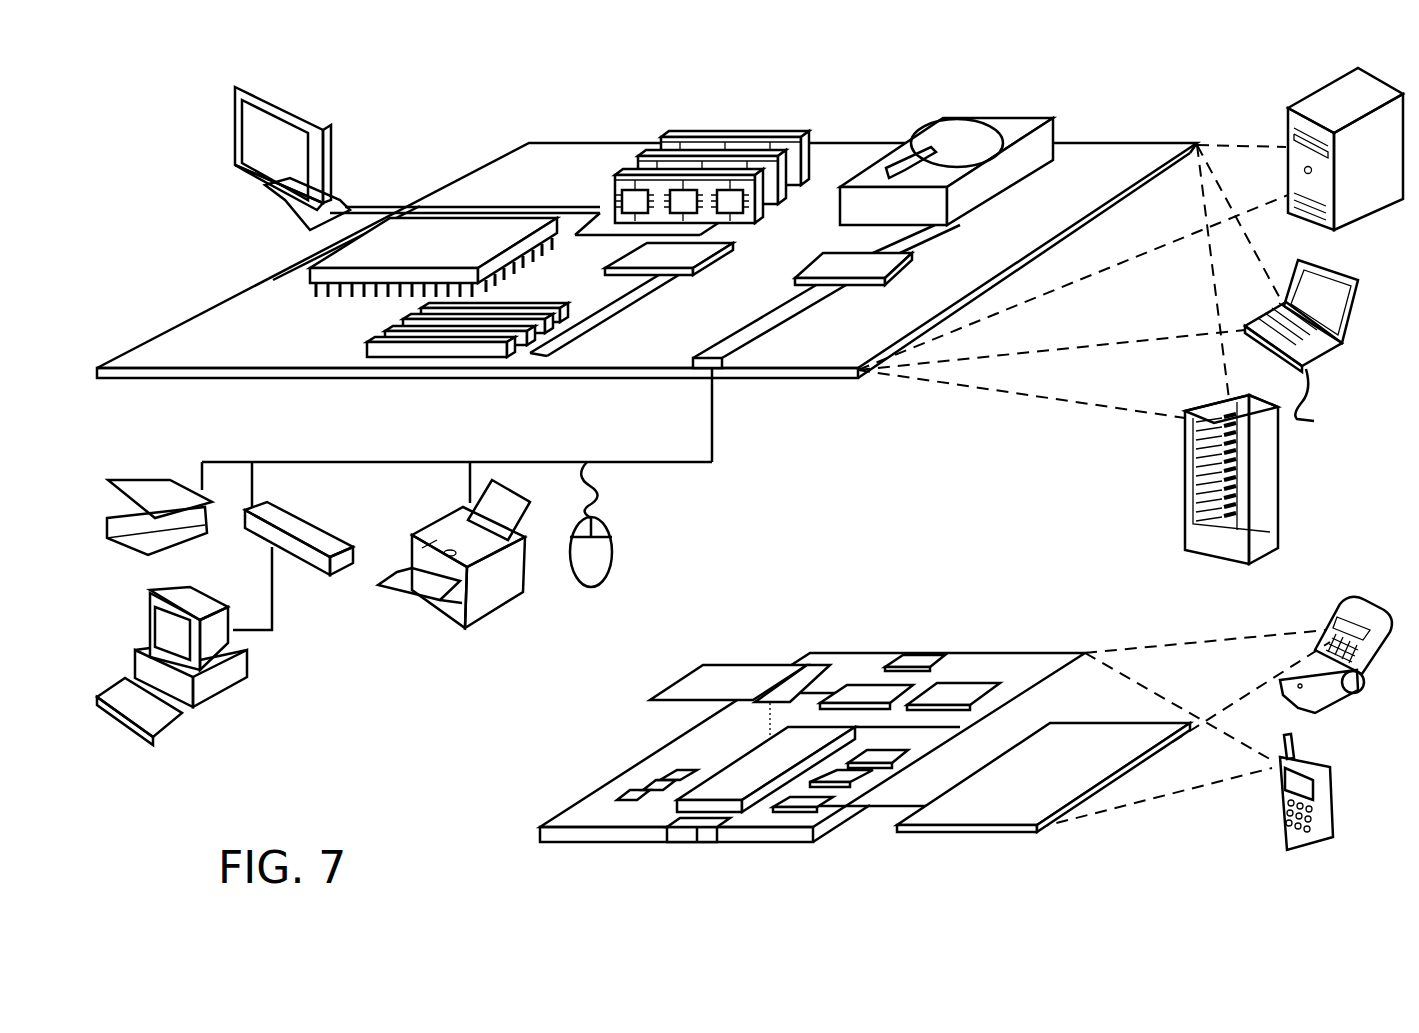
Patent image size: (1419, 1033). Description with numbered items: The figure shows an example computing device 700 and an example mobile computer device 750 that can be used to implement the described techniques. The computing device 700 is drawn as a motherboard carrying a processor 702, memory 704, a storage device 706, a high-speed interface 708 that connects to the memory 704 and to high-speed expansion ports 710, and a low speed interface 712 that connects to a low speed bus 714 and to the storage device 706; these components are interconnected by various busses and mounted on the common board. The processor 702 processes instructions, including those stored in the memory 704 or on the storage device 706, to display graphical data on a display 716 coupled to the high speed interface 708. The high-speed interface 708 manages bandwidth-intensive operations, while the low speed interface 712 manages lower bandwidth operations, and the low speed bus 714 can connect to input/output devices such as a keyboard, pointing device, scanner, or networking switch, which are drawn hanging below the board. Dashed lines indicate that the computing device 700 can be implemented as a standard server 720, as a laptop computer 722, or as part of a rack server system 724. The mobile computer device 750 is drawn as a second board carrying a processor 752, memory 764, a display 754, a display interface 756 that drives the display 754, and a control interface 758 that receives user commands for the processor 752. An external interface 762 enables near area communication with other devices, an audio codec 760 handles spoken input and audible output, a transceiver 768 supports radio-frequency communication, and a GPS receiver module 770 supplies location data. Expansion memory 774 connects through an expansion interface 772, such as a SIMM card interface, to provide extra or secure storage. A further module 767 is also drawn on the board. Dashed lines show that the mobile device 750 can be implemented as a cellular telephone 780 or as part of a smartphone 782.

The computing device 700 is at (445, 100).
The processor 702 is at (315, 276).
The memory 704 is at (672, 135).
The storage device 706 is at (925, 120).
The high-speed interface 708 is at (630, 248).
The high-speed expansion ports 710 is at (395, 335).
The low speed interface 712 is at (833, 262).
The low speed bus 714 is at (722, 370).
The display 716 is at (240, 86).
The standard server 720 is at (1288, 124).
The laptop computer 722 is at (1307, 351).
The rack server system 724 is at (1186, 506).
The mobile computer device 750 is at (512, 845).
The processor 752 is at (735, 818).
The display 754 is at (1000, 815).
The display interface 756 is at (812, 812).
The control interface 758 is at (846, 788).
The audio codec 760 is at (876, 770).
The external interface 762 is at (697, 843).
The memory 764 is at (640, 786).
The wireless module 767 is at (862, 690).
The transceiver 768 is at (952, 693).
The GPS receiver module 770 is at (922, 658).
The expansion interface 772 is at (792, 660).
The expansion memory 774 is at (703, 665).
The cellular telephone 780 is at (1340, 606).
The smartphone 782 is at (1280, 805).